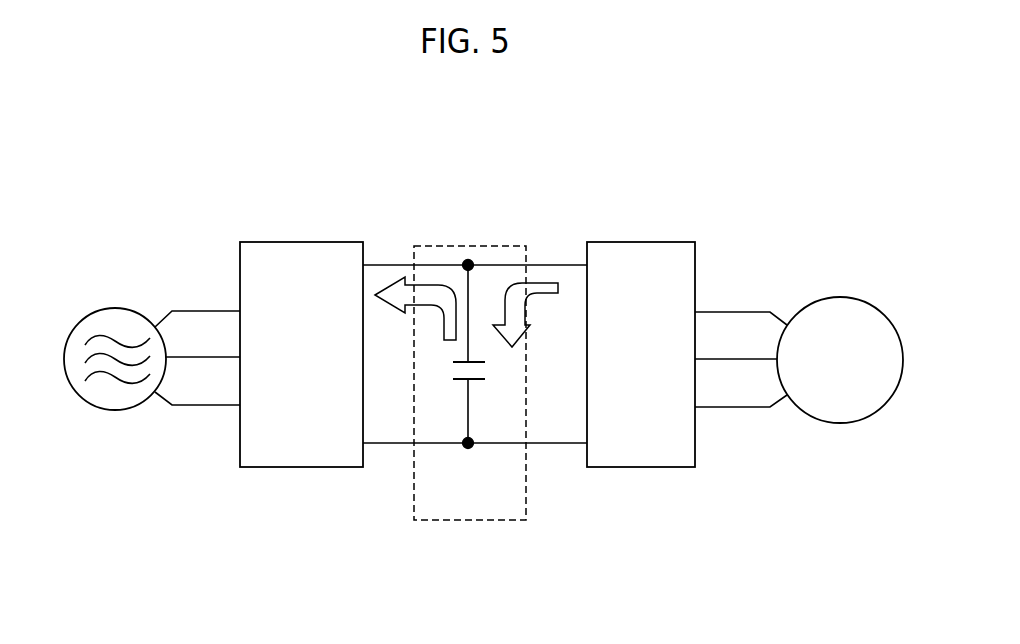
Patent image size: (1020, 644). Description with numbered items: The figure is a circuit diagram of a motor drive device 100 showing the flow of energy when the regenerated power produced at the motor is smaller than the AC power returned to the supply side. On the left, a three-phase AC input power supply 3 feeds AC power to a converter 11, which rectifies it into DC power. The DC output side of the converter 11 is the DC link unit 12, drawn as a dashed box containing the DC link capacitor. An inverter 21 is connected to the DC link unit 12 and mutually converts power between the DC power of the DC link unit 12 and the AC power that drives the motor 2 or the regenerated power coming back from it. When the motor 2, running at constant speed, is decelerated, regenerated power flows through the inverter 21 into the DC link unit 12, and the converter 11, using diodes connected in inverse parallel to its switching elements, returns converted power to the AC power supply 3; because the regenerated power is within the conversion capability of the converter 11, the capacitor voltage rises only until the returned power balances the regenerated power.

The motor drive device 100 is at (510, 155).
The three-phase AC input power supply 3 is at (112, 307).
The converter 11 is at (295, 242).
The DC link unit 12 is at (453, 520).
The inverter 21 is at (638, 242).
The motor 2 is at (852, 298).